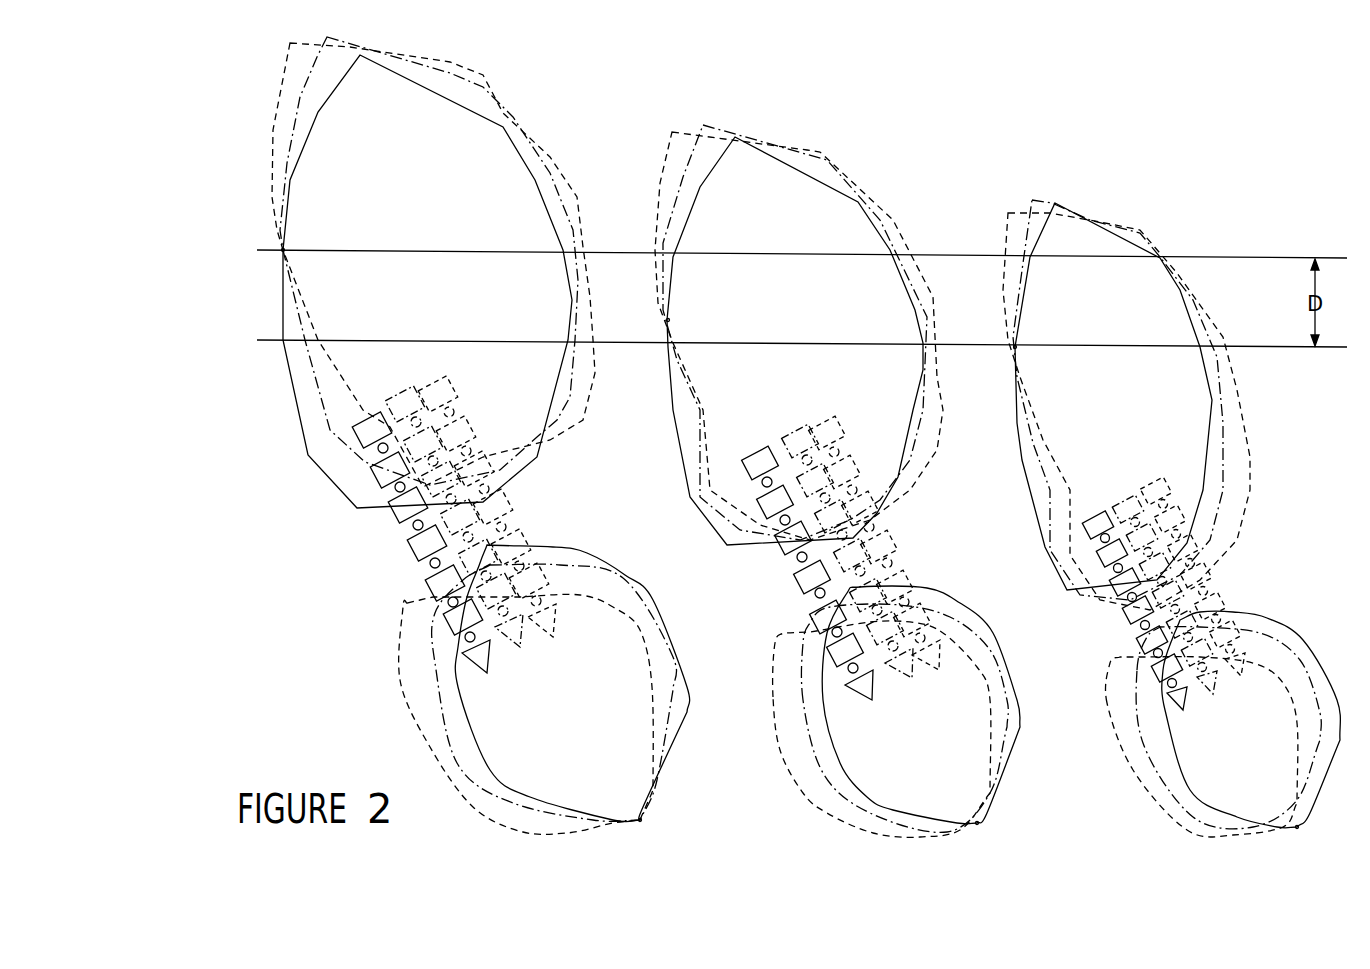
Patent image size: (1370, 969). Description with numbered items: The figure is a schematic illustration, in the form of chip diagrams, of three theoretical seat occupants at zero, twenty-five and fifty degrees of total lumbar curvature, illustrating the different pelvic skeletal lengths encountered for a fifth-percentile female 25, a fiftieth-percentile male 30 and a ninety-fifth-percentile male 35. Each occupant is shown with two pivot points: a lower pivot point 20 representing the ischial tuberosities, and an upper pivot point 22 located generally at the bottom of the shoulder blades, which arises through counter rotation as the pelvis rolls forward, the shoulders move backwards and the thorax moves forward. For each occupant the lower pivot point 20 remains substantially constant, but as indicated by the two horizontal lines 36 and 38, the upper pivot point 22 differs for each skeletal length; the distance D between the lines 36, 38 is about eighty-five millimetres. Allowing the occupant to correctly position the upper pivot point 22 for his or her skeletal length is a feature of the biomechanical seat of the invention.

The lower pivot point 20 is at (640, 820).
The upper pivot point 22 is at (283, 250).
The 5% female 25 is at (1280, 581).
The 50% male 30 is at (958, 554).
The 95% male 35 is at (590, 516).
The line 36 is at (1293, 347).
The line 38 is at (1293, 258).